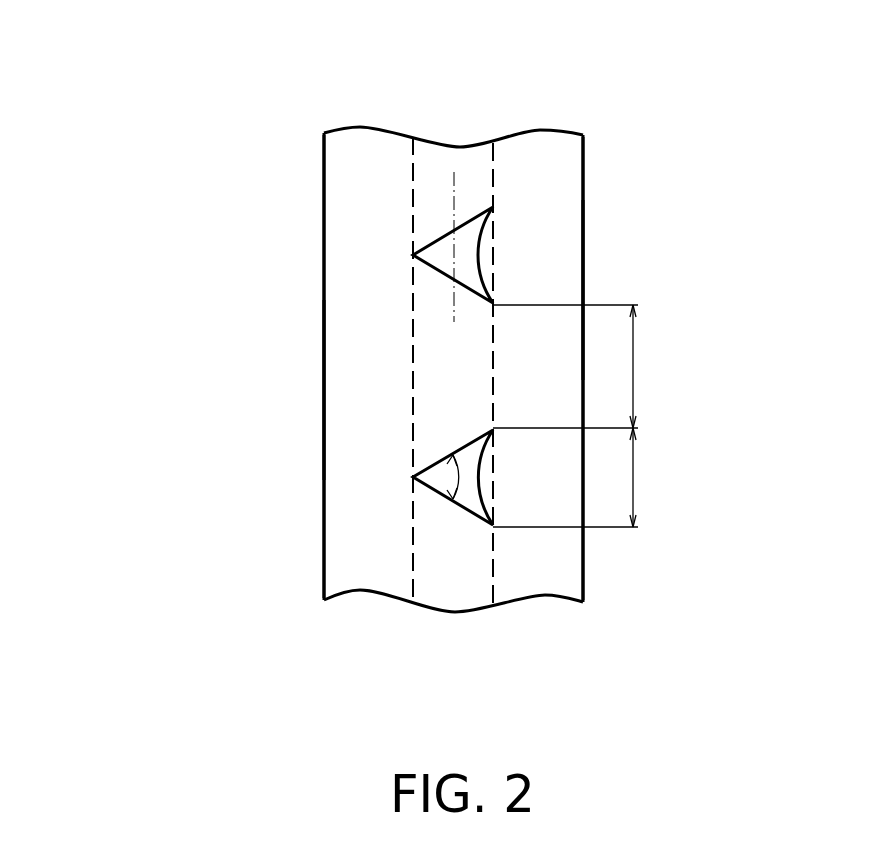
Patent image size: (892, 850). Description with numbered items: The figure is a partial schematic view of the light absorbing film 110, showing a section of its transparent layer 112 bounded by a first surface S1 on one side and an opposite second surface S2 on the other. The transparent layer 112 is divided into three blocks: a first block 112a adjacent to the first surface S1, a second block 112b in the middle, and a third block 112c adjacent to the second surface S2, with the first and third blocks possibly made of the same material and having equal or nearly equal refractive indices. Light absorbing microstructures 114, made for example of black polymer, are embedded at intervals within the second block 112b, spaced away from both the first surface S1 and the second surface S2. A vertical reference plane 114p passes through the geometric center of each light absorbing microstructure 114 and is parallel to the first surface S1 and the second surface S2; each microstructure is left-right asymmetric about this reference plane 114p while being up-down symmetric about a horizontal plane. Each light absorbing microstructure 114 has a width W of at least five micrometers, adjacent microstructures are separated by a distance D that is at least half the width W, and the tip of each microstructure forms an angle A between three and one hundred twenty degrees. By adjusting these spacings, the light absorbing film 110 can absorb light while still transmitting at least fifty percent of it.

The light absorbing film 110 is at (770, 640).
The transparent layer 112 is at (557, 67).
The first block 112a is at (412, 127).
The second block 112b is at (493, 127).
The third block 112c is at (583, 127).
The light absorbing microstructures 114 is at (446, 263).
The reference plane 114p is at (454, 192).
The first surface S1 is at (324, 397).
The second surface S2 is at (583, 282).
The distance between adjacent light absorbing microstructures D is at (580, 366).
The width of light absorbing microstructure W is at (581, 477).
The angle of tip A is at (457, 477).